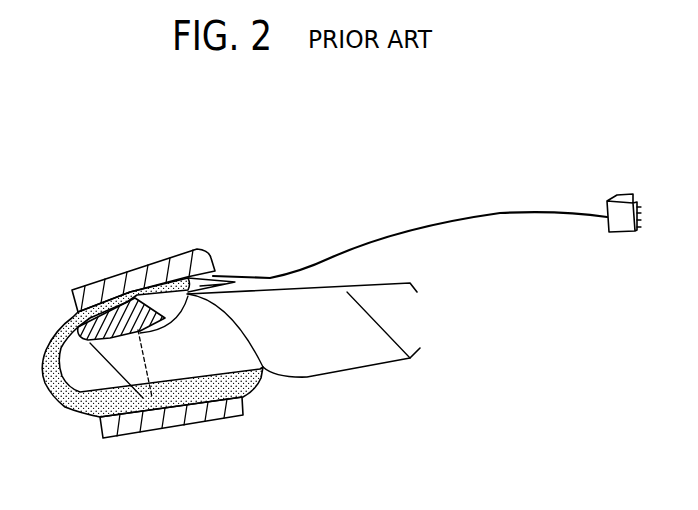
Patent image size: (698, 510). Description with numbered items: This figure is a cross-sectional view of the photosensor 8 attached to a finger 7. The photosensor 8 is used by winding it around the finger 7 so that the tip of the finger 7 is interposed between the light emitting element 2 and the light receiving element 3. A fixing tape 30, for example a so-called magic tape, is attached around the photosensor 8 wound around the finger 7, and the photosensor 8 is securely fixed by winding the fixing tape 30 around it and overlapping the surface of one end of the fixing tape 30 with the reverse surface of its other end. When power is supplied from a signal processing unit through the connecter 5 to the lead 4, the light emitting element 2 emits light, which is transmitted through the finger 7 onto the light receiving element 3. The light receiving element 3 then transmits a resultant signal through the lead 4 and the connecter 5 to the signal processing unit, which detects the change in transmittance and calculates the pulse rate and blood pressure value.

The light emitting element 2 is at (153, 400).
The light receiving element 3 is at (140, 335).
The lead 4 is at (332, 256).
The connecter 5 is at (628, 236).
The finger 7 is at (333, 355).
The photosensor 8 is at (73, 402).
The fixing tape 30 is at (183, 262).